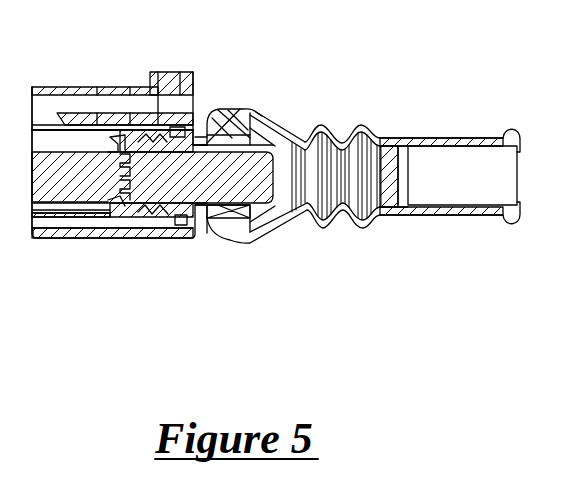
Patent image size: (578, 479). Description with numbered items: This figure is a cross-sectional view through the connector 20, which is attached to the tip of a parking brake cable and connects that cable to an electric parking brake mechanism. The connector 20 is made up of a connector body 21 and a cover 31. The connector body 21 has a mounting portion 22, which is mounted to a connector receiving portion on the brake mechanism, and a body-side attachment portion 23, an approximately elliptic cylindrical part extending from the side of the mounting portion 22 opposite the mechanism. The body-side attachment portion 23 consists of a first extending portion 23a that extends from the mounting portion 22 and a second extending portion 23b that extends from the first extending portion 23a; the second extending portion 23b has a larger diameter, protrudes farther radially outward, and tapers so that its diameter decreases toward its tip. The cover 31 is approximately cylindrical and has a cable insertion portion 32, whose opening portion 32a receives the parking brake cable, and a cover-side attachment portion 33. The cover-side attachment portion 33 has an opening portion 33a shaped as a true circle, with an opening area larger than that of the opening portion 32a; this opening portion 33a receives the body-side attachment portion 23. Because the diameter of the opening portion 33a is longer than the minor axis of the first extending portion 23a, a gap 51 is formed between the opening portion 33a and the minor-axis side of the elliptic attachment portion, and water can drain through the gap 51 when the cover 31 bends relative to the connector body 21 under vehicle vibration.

The connector 20 is at (461, 62).
The connector body 21 is at (67, 87).
The mounting portion 22 is at (32, 87).
The body-side attachment portion 23 is at (268, 216).
The first extending portion 23a is at (246, 130).
The second extending portion 23b is at (300, 138).
The cover 31 is at (357, 134).
The cable insertion portion 32 is at (488, 141).
The opening portion 32a is at (510, 138).
The cover-side attachment portion 33 is at (247, 244).
The opening portion 33a is at (199, 140).
The gap 51 is at (209, 232).